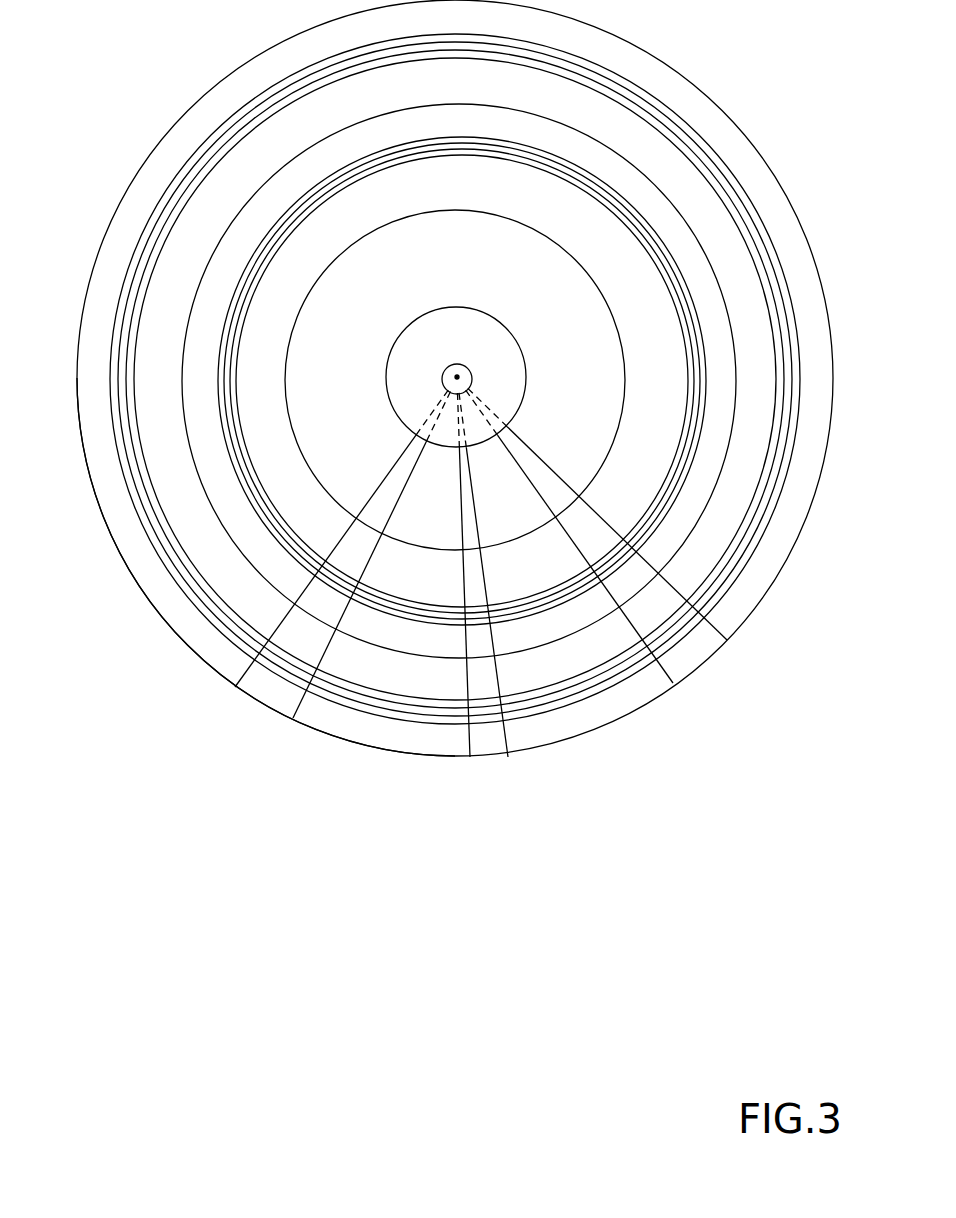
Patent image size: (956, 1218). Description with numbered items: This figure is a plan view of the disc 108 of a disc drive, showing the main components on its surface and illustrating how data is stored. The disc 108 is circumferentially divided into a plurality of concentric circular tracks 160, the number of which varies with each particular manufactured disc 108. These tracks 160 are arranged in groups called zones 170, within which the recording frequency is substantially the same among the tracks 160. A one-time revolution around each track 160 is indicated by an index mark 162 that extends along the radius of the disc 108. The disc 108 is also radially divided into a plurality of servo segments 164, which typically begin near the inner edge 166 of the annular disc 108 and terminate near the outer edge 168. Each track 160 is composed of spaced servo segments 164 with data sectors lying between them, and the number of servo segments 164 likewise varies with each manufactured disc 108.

The disc 108 is at (203, 92).
The tracks 160 is at (233, 459).
The index mark 162 is at (248, 682).
The servo segments 164 is at (325, 613).
The inner edge 166 is at (484, 310).
The outer edge 168 is at (427, 758).
The zones 170 is at (663, 430).